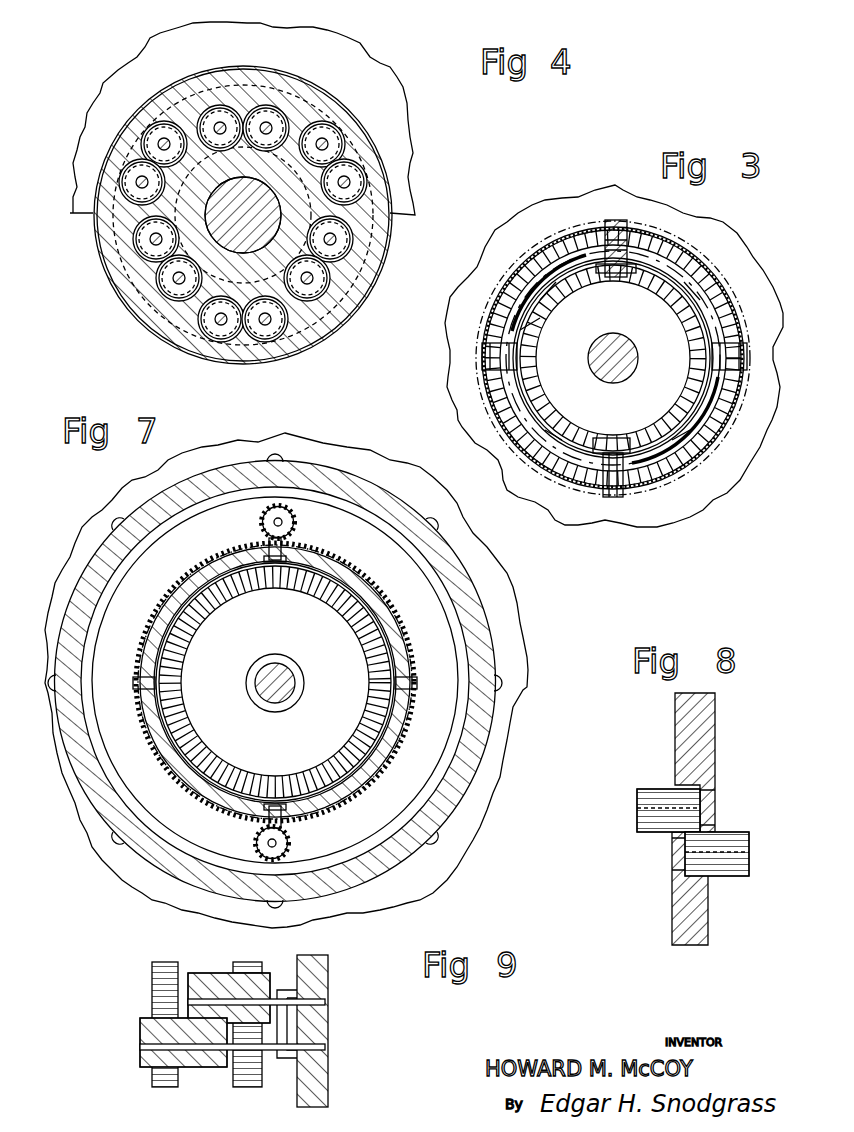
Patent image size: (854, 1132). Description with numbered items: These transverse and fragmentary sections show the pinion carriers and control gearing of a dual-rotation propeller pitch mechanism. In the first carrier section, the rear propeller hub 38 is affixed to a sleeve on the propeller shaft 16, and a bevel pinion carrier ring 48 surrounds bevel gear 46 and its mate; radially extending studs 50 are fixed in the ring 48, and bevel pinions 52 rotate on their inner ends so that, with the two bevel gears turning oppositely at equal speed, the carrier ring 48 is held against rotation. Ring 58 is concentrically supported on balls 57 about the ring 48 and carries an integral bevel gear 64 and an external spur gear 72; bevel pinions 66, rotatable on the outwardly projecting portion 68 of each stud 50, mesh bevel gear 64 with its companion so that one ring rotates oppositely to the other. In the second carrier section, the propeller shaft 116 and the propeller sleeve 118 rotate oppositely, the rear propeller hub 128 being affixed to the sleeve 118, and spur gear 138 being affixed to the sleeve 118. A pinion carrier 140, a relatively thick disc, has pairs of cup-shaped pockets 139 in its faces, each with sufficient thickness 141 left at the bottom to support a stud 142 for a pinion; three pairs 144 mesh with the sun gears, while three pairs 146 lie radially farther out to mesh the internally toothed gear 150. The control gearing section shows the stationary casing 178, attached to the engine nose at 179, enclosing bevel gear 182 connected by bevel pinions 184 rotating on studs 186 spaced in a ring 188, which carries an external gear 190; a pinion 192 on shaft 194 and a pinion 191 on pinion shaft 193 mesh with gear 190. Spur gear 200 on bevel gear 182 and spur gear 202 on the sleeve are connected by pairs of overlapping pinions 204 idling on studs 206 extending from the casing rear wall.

In FIG. 3, the propeller shaft 16 is at (640, 360).
In FIG. 3, the rear propeller hub 38 is at (747, 267).
In FIG. 3, the bevel gear 46 is at (560, 290).
In FIG. 3, the bevel pinion carrier ring 48 is at (545, 306).
In FIG. 3, the stud 50 is at (672, 241).
In FIG. 3, the bevel pinion 52 is at (612, 434).
In FIG. 3, the ball 57 is at (731, 294).
In FIG. 3, the ring 58 is at (668, 291).
In FIG. 3, the bevel gear 64 is at (636, 236).
In FIG. 3, the bevel pinion 66 is at (610, 222).
In FIG. 3, the outwardly projecting portion of stud 68 is at (619, 226).
In FIG. 3, the external spur gear 72 is at (556, 246).
In FIG. 4, the propeller shaft 116 is at (306, 300).
In FIG. 7, the propeller shaft 116 is at (300, 668).
In FIG. 7, the propeller sleeve 118 is at (295, 681).
In FIG. 4, the rear propeller hub 128 is at (375, 67).
In FIG. 4, the spur gear 138 is at (373, 246).
In FIG. 4, the cup-shaped pocket 139 is at (186, 135).
In FIG. 8, the cup-shaped pocket 139 is at (688, 789).
In FIG. 4, the pinion carrier 140 is at (324, 337).
In FIG. 8, the pinion carrier 140 is at (712, 734).
In FIG. 8, the thickness 141 is at (706, 793).
In FIG. 4, the stud 142 is at (267, 128).
In FIG. 8, the stud 142 is at (746, 850).
In FIG. 4, the pair of pinions 144 is at (222, 128).
In FIG. 8, the pair of pinions 144 is at (718, 832).
In FIG. 4, the pair of pinions 146 is at (345, 182).
In FIG. 4, the internally toothed gear 150 is at (135, 285).
In FIG. 7, the stationary casing 178 is at (470, 590).
In FIG. 9, the stationary casing 178 is at (328, 968).
In FIG. 7, the attachment to engine nose 179 is at (385, 463).
In FIG. 7, the bevel gear 182 is at (395, 618).
In FIG. 7, the bevel pinion 184 is at (275, 591).
In FIG. 7, the stud 186 is at (262, 541).
In FIG. 7, the ring 188 is at (345, 573).
In FIG. 7, the external gear 190 is at (326, 810).
In FIG. 7, the pinion 191 is at (291, 841).
In FIG. 7, the pinion 192 is at (297, 522).
In FIG. 7, the pinion shaft 193 is at (266, 841).
In FIG. 7, the shaft 194 is at (272, 517).
In FIG. 9, the spur gear 200 is at (151, 976).
In FIG. 9, the spur gear 202 is at (250, 1088).
In FIG. 9, the overlapping pinion 204 is at (226, 962).
In FIG. 9, the stud 206 is at (326, 1002).